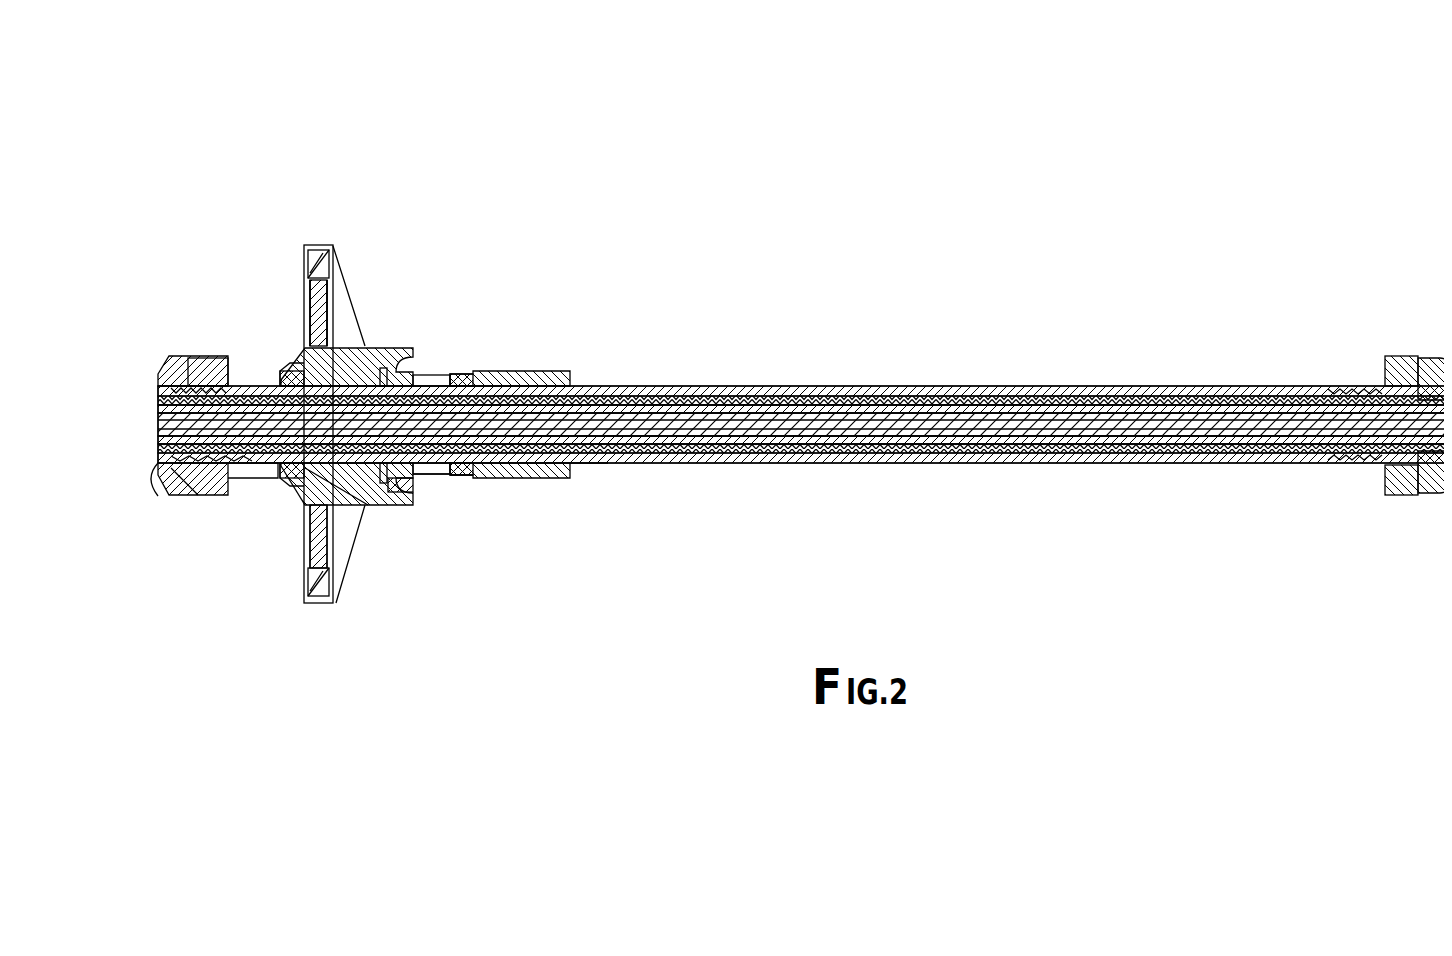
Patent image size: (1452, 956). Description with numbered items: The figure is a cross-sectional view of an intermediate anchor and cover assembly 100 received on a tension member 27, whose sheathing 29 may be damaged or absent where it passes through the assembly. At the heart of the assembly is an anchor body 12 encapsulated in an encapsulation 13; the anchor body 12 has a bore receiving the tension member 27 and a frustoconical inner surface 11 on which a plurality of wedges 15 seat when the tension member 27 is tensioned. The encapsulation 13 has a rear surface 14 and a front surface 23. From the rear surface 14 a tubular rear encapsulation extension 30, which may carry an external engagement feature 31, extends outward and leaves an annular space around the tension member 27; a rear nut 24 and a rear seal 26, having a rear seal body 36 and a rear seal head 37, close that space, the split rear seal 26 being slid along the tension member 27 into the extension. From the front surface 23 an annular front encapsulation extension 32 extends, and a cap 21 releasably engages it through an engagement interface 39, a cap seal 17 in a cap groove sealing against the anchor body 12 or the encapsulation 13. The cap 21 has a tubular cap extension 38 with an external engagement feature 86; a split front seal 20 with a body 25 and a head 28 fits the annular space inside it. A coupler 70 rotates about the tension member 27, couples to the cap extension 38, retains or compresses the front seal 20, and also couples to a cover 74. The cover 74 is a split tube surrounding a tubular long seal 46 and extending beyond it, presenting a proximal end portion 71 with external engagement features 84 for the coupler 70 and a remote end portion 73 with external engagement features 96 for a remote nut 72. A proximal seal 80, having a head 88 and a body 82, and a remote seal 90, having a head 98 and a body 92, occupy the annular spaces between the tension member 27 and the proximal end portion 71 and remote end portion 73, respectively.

The intermediate anchor and cover assembly 100 is at (303, 106).
The frustoconical inner surface 11 is at (292, 368).
The anchor body 12 is at (322, 311).
The encapsulation 13 is at (320, 237).
The rear surface 14 is at (295, 362).
The wedges 15 is at (292, 462).
The cap seal 17 is at (373, 478).
The front seal 20 is at (465, 374).
The cap 21 is at (430, 376).
The front surface 23 is at (325, 264).
The rear nut 24 is at (180, 348).
The body 25 is at (462, 470).
The rear seal 26 is at (220, 377).
The tension member 27 is at (235, 462).
The head 28 is at (490, 470).
The sheathing 29 is at (150, 475).
The rear encapsulation extension 30 is at (248, 460).
The external engagement feature 31 is at (175, 468).
The front encapsulation extension 32 is at (385, 486).
The rear seal body 36 is at (250, 373).
The rear seal head 37 is at (143, 373).
The cap extension 38 is at (445, 468).
The engagement interface 39 is at (428, 468).
The tubular long seal 46 is at (832, 378).
The coupler 70 is at (515, 364).
The proximal end portion 71 is at (550, 460).
The remote nut 72 is at (1360, 282).
The remote end portion 73 is at (1402, 457).
The cover 74 is at (683, 378).
The proximal seal 80 is at (572, 378).
The body 82 is at (603, 378).
The external engagement features 84 is at (525, 470).
The external engagement feature 86 is at (503, 364).
The head 88 is at (565, 370).
The remote seal 90 is at (1302, 282).
The body 92 is at (1320, 540).
The external engagement features 96 is at (1415, 282).
The head 98 is at (1449, 460).